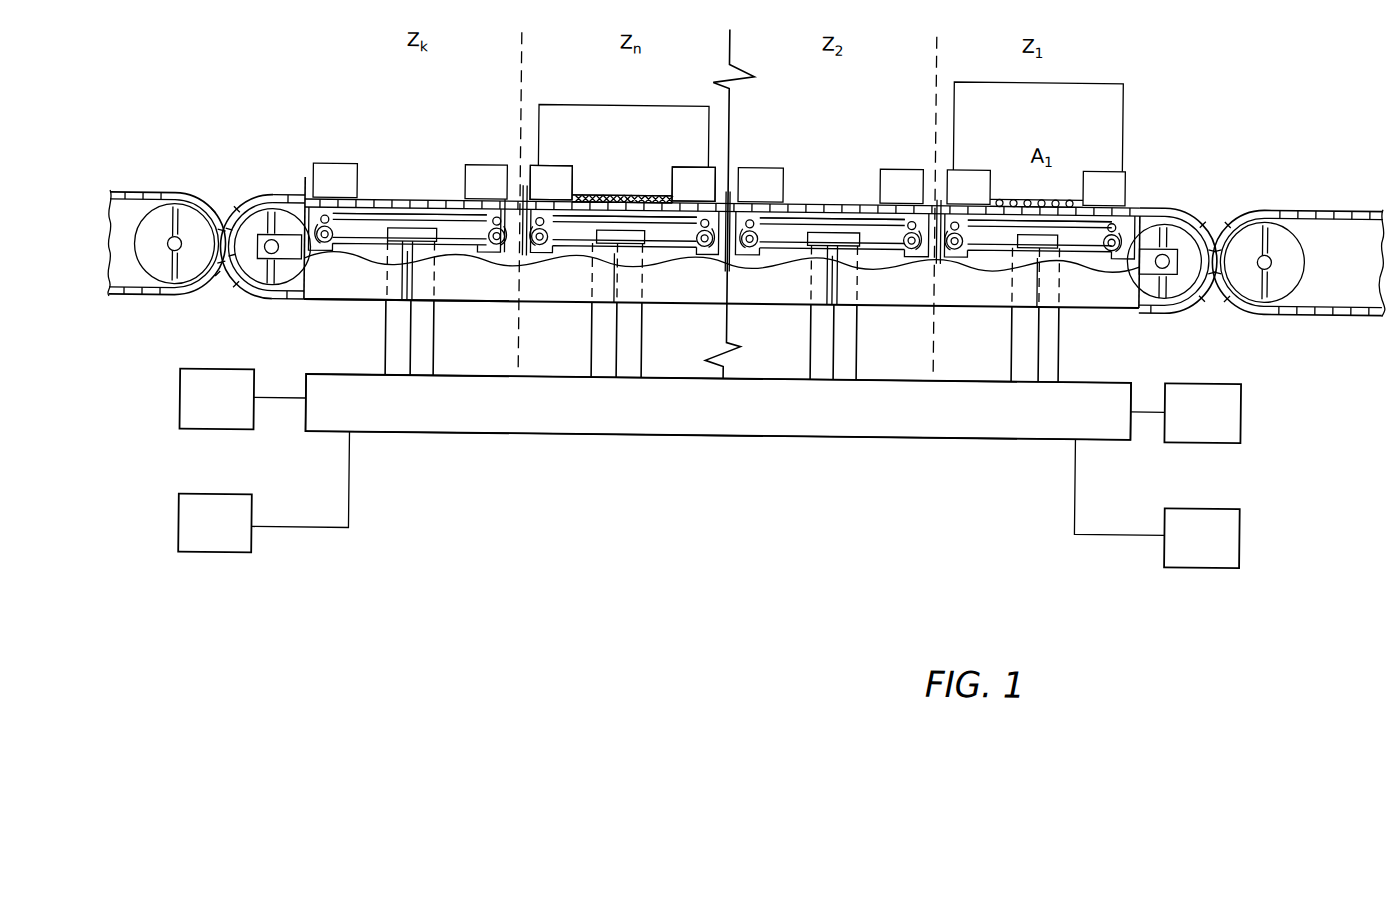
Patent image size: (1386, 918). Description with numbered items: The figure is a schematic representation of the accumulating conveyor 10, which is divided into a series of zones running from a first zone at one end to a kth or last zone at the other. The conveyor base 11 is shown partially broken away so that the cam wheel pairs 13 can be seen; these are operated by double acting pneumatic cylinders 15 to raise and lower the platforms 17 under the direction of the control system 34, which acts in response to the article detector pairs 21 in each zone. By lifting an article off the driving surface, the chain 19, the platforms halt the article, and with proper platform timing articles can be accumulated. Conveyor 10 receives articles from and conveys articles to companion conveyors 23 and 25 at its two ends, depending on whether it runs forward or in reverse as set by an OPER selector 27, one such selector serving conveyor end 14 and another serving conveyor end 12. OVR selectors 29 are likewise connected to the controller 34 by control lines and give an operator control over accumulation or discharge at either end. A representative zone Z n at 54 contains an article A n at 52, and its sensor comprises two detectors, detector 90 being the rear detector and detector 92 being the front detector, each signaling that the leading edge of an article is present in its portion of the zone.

The accumulating conveyor 10 is at (738, 445).
The conveyor base 11 is at (470, 302).
The conveyor end 12 is at (226, 176).
The cam wheel pairs 13 is at (330, 243).
The conveyor end 14 is at (1177, 191).
The double acting pneumatic cylinders 15 is at (442, 235).
The platforms 17 is at (404, 211).
The chain 19 is at (280, 190).
The article detector pairs 21 is at (468, 166).
The companion conveyor 23 is at (177, 188).
The companion conveyor 25 is at (1296, 192).
The OPER selector 27 is at (228, 538).
The OVR selectors 29 is at (181, 380).
The control system 34 is at (988, 418).
The article A n 52 is at (594, 112).
The zone Z n 54 is at (645, 87).
The detector DR n 90 is at (558, 162).
The detector DF n 92 is at (691, 163).